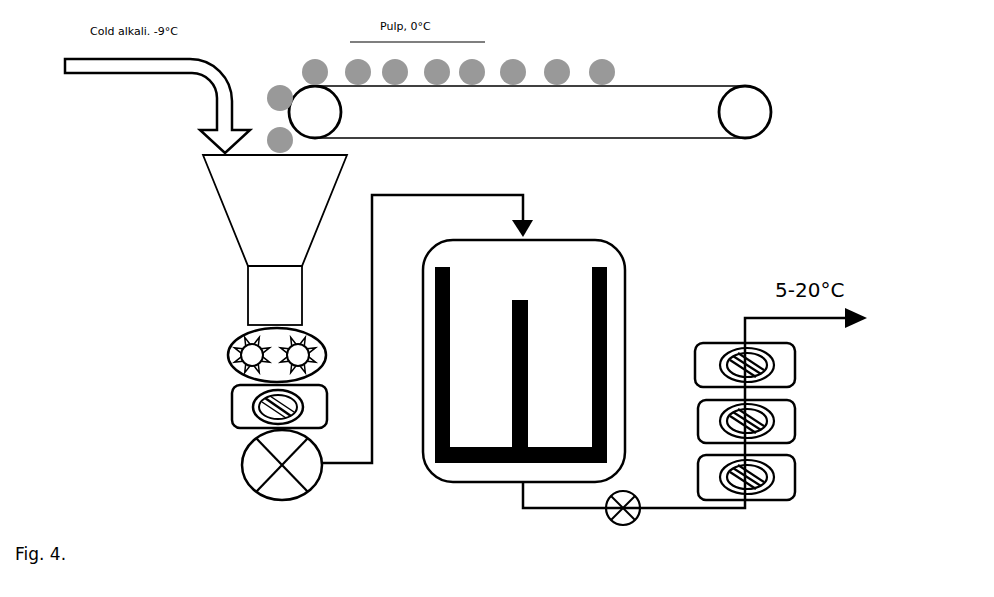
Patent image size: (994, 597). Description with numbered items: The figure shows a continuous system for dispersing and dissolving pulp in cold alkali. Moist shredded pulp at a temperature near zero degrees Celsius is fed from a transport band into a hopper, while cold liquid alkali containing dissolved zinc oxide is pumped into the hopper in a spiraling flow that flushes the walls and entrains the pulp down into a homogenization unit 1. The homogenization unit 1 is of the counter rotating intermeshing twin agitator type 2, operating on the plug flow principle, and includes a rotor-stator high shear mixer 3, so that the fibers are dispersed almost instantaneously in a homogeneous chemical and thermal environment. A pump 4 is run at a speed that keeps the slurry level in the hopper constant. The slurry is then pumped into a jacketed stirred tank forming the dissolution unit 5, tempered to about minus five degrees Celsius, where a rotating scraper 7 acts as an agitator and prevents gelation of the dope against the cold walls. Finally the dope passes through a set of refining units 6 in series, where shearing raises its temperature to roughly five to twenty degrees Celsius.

The homogenization unit 1 is at (208, 280).
The counter rotating intermeshing twin agitator 2 is at (228, 357).
The high shear mixer 3 is at (250, 407).
The pump 4 is at (262, 473).
The dissolution unit 5 is at (578, 250).
The refining units 6 is at (783, 413).
The rotating scraper 7 is at (607, 297).